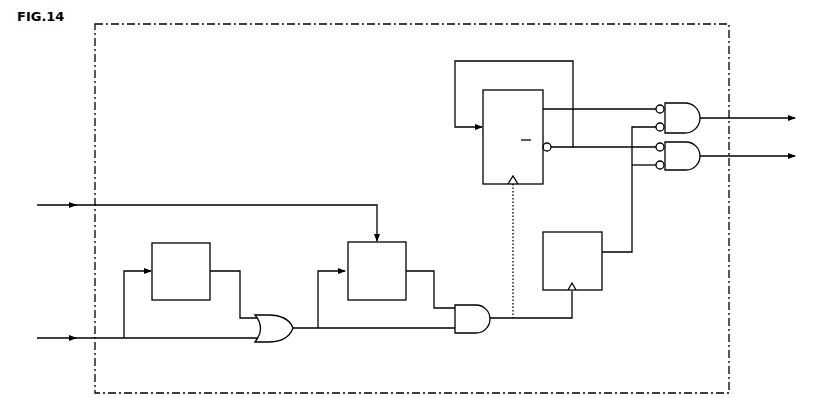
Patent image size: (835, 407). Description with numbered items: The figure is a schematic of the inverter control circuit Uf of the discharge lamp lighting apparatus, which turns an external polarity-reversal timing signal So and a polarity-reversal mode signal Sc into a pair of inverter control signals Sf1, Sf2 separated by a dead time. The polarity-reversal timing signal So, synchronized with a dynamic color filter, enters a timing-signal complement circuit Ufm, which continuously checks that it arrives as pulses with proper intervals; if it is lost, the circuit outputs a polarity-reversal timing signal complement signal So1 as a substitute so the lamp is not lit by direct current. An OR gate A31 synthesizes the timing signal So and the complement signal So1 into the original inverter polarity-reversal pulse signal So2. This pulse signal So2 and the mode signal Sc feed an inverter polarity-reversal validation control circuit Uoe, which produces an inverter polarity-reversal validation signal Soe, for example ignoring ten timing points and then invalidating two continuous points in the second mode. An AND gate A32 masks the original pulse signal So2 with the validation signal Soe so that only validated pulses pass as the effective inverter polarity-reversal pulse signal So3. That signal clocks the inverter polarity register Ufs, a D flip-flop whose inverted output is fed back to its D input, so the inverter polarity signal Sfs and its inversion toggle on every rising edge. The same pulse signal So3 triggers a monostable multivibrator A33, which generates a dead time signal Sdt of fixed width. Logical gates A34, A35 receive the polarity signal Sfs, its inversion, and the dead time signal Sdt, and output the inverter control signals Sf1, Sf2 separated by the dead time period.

The inverter control circuit Uf is at (729, 338).
The polarity-reversal mode signal Sc is at (56, 201).
The polarity-reversal timing signal So is at (56, 334).
The timing-signal complement circuit Ufm is at (181, 271).
The polarity-reversal timing signal complement signal So1 is at (238, 268).
The OR gate A31 is at (272, 344).
The original inverter polarity-reversal pulse signal So2 is at (312, 331).
The inverter polarity-reversal validation control circuit Uoe is at (377, 271).
The inverter polarity-reversal validation signal Soe is at (430, 268).
The AND gate A32 is at (472, 335).
The inverter polarity-reversal pulse signal So3 is at (506, 321).
The inverter polarity register Ufs is at (483, 165).
The inverter polarity signal Sfs is at (598, 107).
The monostable multivibrator A33 is at (602, 280).
The dead time signal Sdt is at (632, 238).
The logical gate A34 is at (682, 102).
The logical gate A35 is at (682, 171).
The inverter control signal Sf1 is at (765, 116).
The inverter control signal Sf2 is at (766, 158).